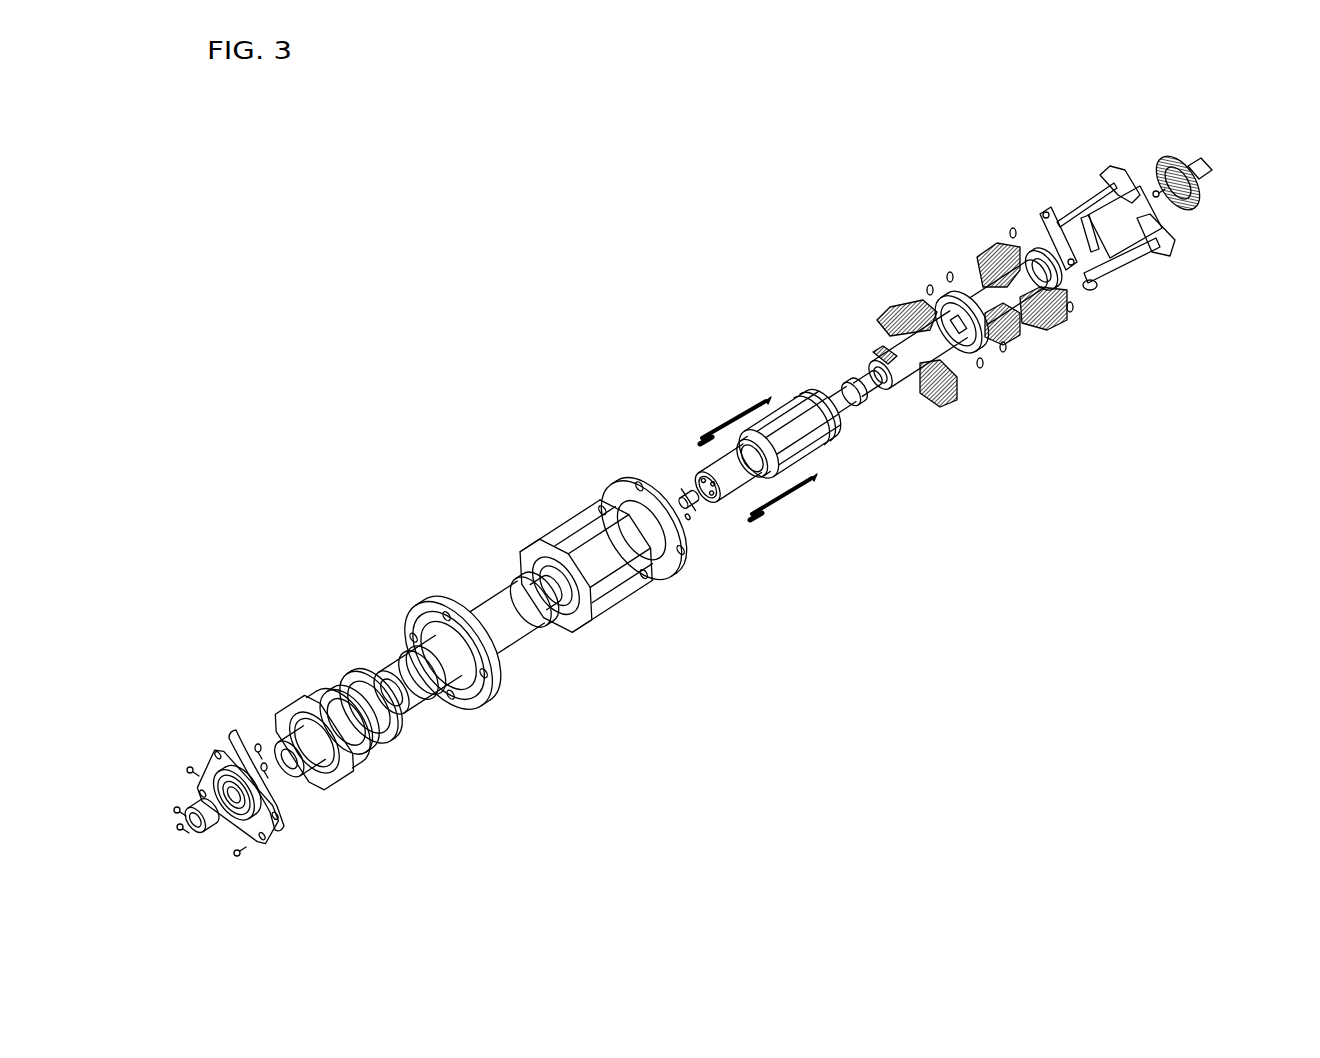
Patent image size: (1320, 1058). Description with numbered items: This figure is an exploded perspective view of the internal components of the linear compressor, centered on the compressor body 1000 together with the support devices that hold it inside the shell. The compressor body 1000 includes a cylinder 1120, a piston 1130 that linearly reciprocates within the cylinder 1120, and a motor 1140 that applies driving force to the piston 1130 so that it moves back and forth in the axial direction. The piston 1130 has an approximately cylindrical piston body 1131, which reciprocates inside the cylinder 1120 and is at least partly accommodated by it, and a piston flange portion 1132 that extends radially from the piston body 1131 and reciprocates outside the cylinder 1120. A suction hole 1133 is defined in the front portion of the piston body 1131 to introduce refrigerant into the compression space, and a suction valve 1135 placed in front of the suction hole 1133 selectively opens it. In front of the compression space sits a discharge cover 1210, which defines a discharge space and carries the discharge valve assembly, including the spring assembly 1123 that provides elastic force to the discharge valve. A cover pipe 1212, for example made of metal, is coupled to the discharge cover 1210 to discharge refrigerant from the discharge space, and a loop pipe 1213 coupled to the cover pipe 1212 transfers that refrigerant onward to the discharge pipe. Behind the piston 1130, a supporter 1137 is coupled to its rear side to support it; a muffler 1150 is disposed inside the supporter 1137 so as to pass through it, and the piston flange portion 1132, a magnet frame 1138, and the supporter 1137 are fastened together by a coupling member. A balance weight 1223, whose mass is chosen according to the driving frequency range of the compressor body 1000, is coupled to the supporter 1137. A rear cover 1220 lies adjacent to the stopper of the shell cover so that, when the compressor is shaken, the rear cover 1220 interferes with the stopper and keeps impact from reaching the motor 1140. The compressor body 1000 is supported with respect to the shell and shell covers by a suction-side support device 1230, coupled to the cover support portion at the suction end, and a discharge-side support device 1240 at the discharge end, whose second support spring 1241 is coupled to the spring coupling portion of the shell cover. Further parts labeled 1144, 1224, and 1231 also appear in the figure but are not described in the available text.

The compressor body 1000 is at (330, 309).
The cylinder 1120 is at (398, 673).
The spring assembly 1123 is at (380, 760).
The piston 1130 is at (760, 462).
The piston body 1131 is at (720, 473).
The piston flange portion 1132 is at (771, 480).
The suction hole 1133 is at (703, 507).
The suction valve 1135 is at (686, 490).
The supporter 1137 is at (960, 353).
The magnet frame 1138 is at (790, 407).
The motor 1140 is at (550, 516).
The end plate 1144 is at (627, 477).
The muffler 1150 is at (868, 417).
The discharge cover 1210 is at (317, 777).
The cover pipe 1212 is at (278, 727).
The loop pipe 1213 is at (242, 733).
The rear cover 1220 is at (1120, 270).
The balance weight 1223 is at (1033, 250).
The end bracket 1224 is at (1072, 266).
The suction-side support device 1230 is at (1200, 199).
The disc 1231 is at (1168, 160).
The discharge-side support device 1240 is at (223, 835).
The second support spring 1241 is at (207, 762).